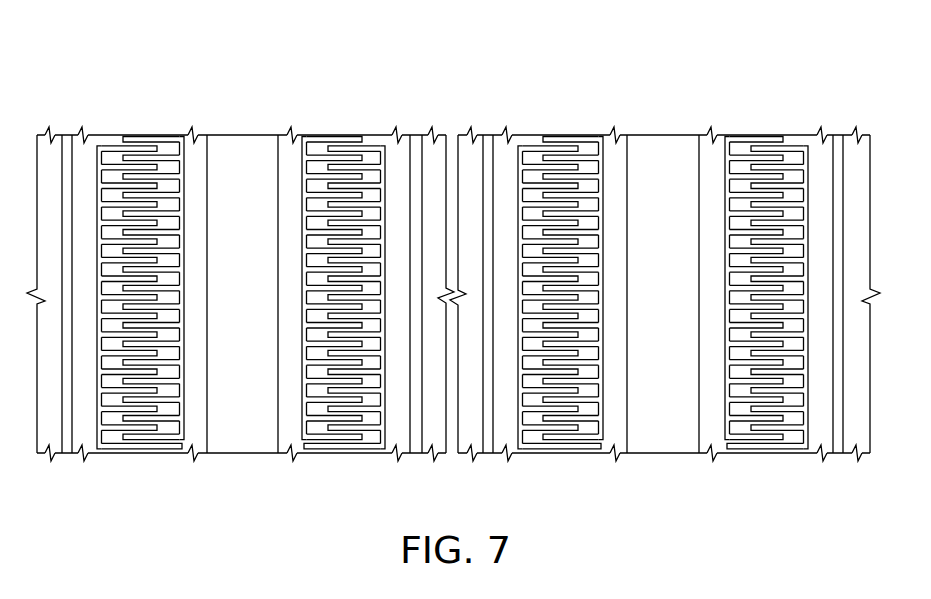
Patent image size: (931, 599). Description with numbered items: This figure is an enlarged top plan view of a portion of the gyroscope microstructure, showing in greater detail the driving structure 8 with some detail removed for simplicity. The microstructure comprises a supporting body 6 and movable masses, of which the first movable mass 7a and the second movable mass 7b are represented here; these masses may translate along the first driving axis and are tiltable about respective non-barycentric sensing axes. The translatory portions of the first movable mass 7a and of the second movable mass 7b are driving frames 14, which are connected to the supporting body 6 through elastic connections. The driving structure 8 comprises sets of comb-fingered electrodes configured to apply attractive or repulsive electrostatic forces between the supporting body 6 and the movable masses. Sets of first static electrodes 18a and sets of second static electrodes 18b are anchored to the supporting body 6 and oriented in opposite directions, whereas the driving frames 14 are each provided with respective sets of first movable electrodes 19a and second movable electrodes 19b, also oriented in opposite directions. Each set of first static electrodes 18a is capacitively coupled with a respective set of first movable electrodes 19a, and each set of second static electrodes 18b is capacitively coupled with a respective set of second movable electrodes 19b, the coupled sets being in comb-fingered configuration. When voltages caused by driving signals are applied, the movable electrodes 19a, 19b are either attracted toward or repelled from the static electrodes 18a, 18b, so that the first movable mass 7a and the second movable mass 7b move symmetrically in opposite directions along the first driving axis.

The supporting body 6 is at (239, 440).
The first movable mass 7a is at (426, 140).
The second movable mass 7b is at (480, 138).
The driving structure 8 is at (453, 285).
The driving frame 14 is at (77, 140).
The first static electrodes 18a is at (173, 160).
The second static electrodes 18b is at (338, 140).
The first movable electrodes 19a is at (117, 416).
The second movable electrodes 19b is at (370, 416).